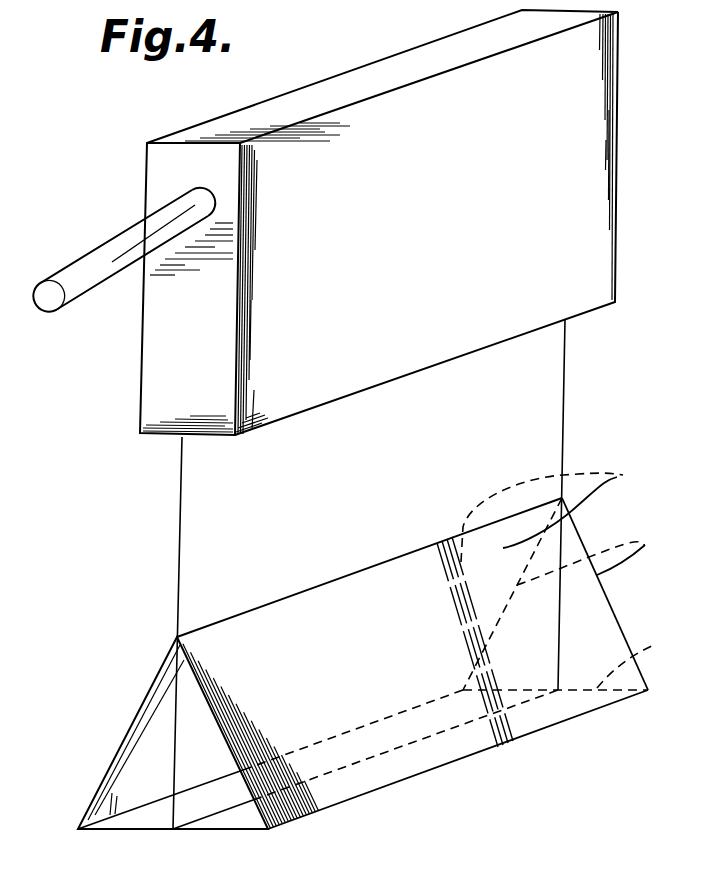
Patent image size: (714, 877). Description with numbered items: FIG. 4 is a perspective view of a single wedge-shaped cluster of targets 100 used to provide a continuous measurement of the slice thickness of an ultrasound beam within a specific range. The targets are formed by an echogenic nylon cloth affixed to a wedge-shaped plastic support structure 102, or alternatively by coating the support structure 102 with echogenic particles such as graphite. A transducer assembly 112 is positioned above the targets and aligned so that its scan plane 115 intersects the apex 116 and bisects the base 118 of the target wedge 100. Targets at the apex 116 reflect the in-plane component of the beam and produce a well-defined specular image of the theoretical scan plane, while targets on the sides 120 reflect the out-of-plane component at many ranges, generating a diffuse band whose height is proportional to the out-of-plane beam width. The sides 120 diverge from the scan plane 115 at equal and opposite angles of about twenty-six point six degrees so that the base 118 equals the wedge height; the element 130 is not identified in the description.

The wedge-shaped cluster of targets 100 is at (106, 707).
The wedge-shaped plastic support structure 102 is at (618, 476).
The transducer assembly 112 is at (600, 136).
The scan plane 115 is at (545, 450).
The apex 116 is at (228, 619).
The base 118 is at (660, 640).
The sides 120 is at (645, 545).
The support 130 is at (535, 873).